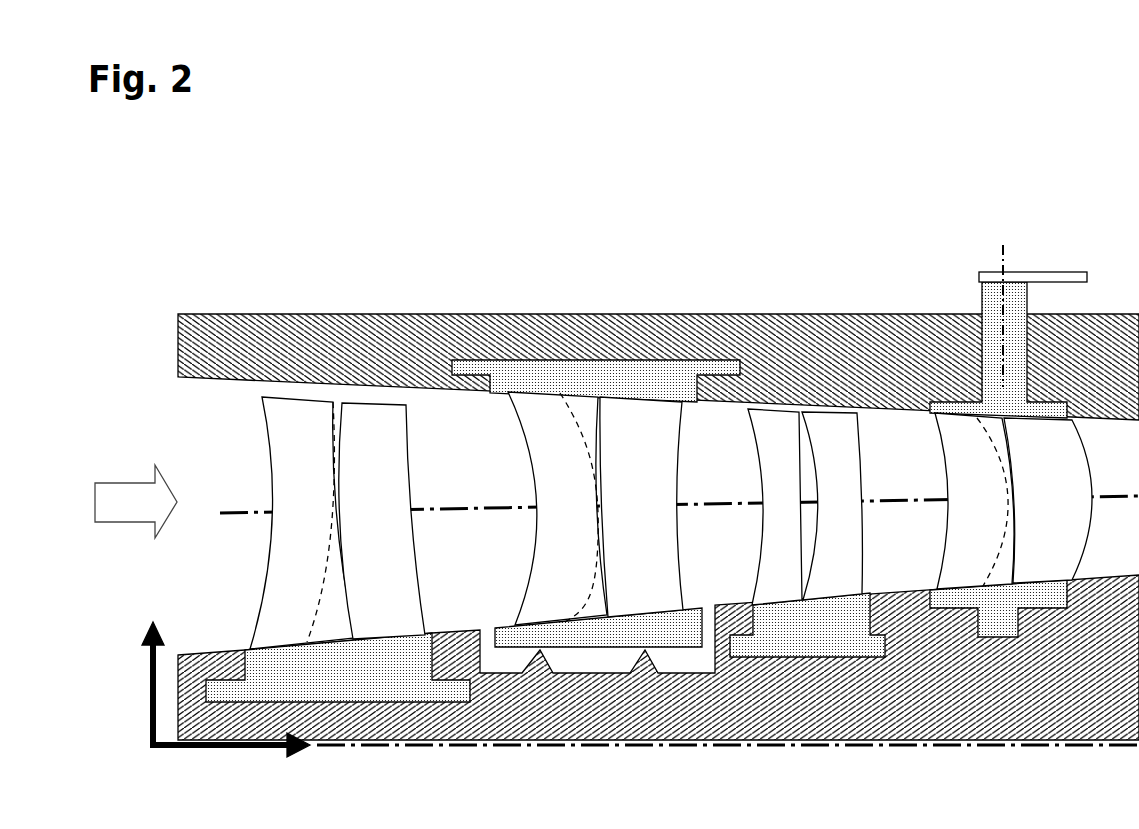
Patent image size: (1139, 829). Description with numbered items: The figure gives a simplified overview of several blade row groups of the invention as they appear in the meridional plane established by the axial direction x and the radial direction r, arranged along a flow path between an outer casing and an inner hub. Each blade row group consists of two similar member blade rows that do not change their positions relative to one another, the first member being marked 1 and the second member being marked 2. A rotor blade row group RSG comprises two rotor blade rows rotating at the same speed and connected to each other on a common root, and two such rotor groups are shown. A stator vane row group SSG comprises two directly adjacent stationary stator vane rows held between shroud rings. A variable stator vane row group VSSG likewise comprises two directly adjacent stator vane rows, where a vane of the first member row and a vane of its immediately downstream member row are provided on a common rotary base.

The rotor blade row group RSG is at (238, 245).
The stator vane row group SSG is at (492, 247).
The variable stator vane row group VSSG is at (923, 243).
The first member blade row 1 is at (632, 520).
The second member blade row 2 is at (715, 518).
The radial direction r is at (130, 675).
The axial direction x is at (230, 772).